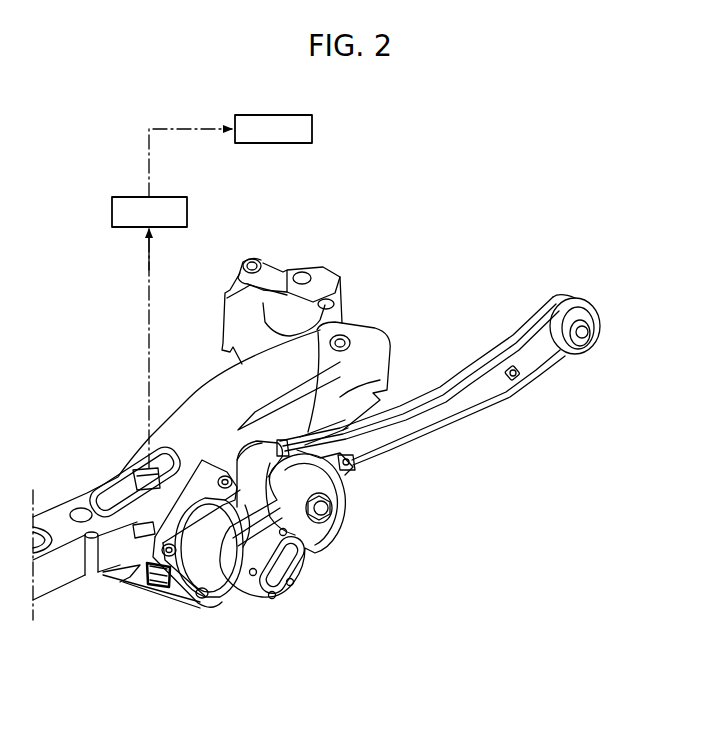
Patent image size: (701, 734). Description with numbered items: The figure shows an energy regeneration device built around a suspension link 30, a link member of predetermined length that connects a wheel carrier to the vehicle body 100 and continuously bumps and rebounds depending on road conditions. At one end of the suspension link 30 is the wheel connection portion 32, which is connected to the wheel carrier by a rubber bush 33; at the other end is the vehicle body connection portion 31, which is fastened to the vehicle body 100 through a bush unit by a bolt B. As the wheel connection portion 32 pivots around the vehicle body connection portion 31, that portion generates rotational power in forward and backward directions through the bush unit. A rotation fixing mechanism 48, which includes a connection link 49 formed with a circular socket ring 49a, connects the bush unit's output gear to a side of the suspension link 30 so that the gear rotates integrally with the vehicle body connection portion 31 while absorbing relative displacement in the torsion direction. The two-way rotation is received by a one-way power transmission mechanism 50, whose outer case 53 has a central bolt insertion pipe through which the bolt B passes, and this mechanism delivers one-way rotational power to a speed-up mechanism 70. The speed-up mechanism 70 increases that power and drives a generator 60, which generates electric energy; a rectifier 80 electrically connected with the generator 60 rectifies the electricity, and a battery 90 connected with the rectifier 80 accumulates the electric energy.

The battery 90 is at (315, 128).
The rectifier 80 is at (112, 210).
The vehicle body 100 is at (83, 500).
The generator 60 is at (136, 478).
The speed-up mechanism 70 is at (208, 604).
The one-way power transmission mechanism 50 is at (280, 598).
The outer case 53 is at (312, 532).
The bolt B is at (330, 512).
The suspension link 30 is at (433, 423).
The wheel connection portion 32 is at (557, 297).
The rubber bush 33 is at (588, 338).
The vehicle body connection portion 31 is at (245, 447).
The rotation fixing mechanism 48 is at (283, 430).
The connection link 49 is at (318, 428).
The socket ring 49a is at (235, 457).